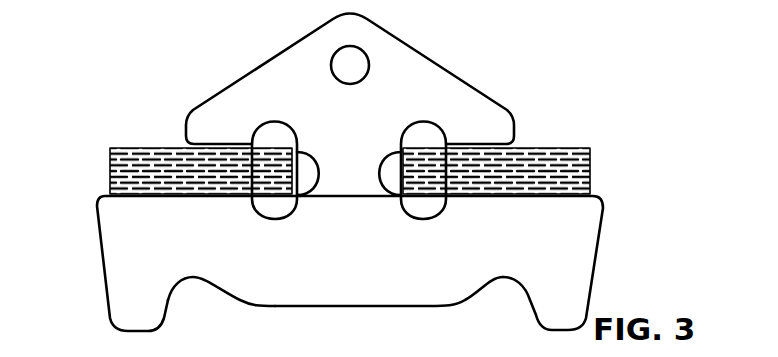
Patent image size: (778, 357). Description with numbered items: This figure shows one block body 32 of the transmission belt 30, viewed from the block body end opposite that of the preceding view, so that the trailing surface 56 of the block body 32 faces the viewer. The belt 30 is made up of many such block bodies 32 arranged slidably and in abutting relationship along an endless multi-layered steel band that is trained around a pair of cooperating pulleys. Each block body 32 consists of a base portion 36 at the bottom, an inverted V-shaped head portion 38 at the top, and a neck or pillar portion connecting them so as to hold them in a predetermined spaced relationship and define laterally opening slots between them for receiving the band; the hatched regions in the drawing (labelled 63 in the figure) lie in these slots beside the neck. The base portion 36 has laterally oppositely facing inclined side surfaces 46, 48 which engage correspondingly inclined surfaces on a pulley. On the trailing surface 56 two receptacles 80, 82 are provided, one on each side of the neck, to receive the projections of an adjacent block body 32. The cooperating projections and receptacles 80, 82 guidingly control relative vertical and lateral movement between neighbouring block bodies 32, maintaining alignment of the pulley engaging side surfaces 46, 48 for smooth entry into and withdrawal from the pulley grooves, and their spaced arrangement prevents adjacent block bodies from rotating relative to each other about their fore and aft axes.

The transmission belt 30 is at (505, 36).
The block body 32 is at (377, 48).
The base portion 36 is at (388, 277).
The head portion 38 is at (463, 100).
The inclined side surface 46 is at (101, 253).
The inclined side surface 48 is at (596, 244).
The trailing surface 56 is at (270, 273).
The resilient pad 63 is at (565, 184).
The receptacle 80 is at (307, 170).
The receptacle 82 is at (391, 168).